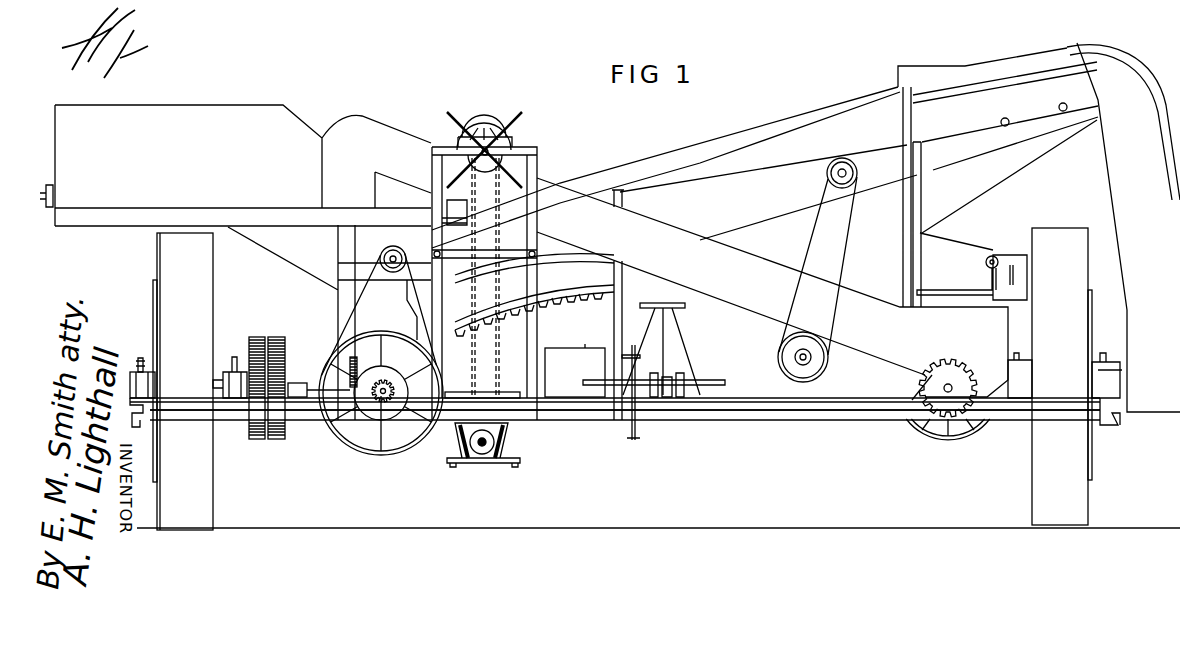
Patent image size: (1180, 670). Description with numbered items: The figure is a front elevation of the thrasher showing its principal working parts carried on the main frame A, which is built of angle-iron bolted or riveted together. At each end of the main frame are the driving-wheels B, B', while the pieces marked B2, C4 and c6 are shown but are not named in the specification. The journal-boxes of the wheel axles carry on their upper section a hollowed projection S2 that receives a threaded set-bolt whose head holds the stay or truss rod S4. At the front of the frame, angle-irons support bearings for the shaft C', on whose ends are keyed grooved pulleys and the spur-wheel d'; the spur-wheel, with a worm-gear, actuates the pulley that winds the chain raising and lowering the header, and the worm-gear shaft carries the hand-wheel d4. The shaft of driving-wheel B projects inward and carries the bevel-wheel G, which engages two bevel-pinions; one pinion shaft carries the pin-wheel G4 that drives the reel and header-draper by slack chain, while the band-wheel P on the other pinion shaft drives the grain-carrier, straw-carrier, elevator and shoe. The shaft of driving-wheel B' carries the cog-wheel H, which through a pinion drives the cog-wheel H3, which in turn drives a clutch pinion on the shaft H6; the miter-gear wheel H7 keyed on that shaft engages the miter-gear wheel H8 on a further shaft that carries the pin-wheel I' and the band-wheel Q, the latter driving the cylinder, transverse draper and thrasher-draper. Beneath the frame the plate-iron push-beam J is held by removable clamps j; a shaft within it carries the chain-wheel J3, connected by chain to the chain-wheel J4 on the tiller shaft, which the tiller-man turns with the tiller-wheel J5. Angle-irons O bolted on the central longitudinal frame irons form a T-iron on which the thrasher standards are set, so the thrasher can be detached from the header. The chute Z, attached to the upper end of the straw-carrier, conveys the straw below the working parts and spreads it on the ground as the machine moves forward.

The main frame A is at (130, 400).
The driving-wheel B is at (1060, 376).
The driving-wheel B' is at (185, 381).
The standard brace strip B2 is at (156, 300).
The shaft C' is at (604, 319).
The frame bar C4 is at (300, 420).
The bracket c6 is at (631, 354).
The spur-wheel d' is at (687, 370).
The hand-wheel d4 is at (685, 308).
The bevel-wheel G is at (965, 432).
The pin-wheel G4 is at (935, 395).
The cog-wheel H is at (256, 337).
The cog-wheel H3 is at (278, 337).
The shaft H6 is at (300, 383).
The miter-gear wheel H7 is at (350, 362).
The miter-gear wheel H8 is at (381, 383).
The pin-wheel I' is at (382, 423).
The push-beam J is at (510, 442).
The clamps j is at (503, 392).
The chain-wheel J3 is at (482, 454).
The chain-wheel J4 is at (482, 165).
The tiller-wheel J5 is at (515, 135).
The angle-irons O is at (553, 392).
The band-wheel P is at (945, 440).
The band-wheel Q is at (392, 455).
The projection S2 is at (130, 375).
The stay or truss rod S4 is at (138, 358).
The chute Z is at (1123, 227).